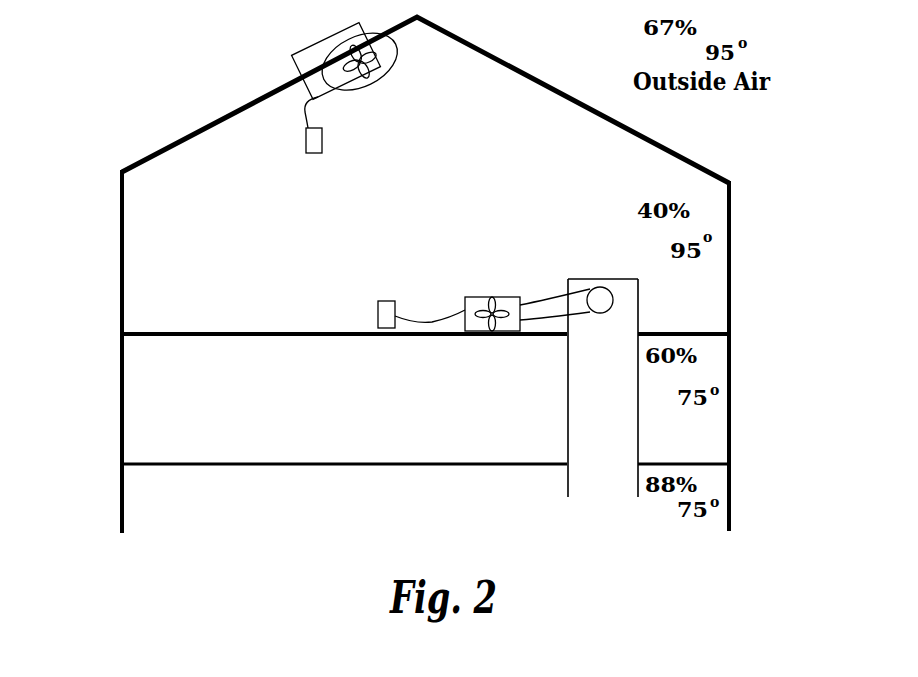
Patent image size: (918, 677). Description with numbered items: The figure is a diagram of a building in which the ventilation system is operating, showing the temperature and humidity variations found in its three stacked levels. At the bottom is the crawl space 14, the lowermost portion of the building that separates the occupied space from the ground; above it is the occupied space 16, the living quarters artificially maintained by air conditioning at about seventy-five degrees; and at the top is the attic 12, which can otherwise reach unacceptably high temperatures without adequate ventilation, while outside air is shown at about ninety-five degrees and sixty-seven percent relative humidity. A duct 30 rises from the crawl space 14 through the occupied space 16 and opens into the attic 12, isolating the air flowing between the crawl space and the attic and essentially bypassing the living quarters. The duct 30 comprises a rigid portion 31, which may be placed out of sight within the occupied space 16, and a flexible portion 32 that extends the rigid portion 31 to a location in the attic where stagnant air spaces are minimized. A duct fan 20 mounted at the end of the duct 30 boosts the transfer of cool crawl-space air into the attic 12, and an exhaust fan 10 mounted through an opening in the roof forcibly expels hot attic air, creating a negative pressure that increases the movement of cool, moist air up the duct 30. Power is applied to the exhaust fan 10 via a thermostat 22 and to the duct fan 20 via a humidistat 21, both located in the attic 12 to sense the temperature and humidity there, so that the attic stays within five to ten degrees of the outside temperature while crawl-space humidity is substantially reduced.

The exhaust fan 10 is at (377, 52).
The attic 12 is at (148, 302).
The crawl space 14 is at (122, 508).
The occupied space 16 is at (122, 384).
The duct fan 20 is at (498, 295).
The humidistat 21 is at (375, 302).
The thermostat 22 is at (322, 128).
The duct 30 is at (568, 383).
The rigid portion 31 is at (618, 277).
The flexible portion 32 is at (550, 295).